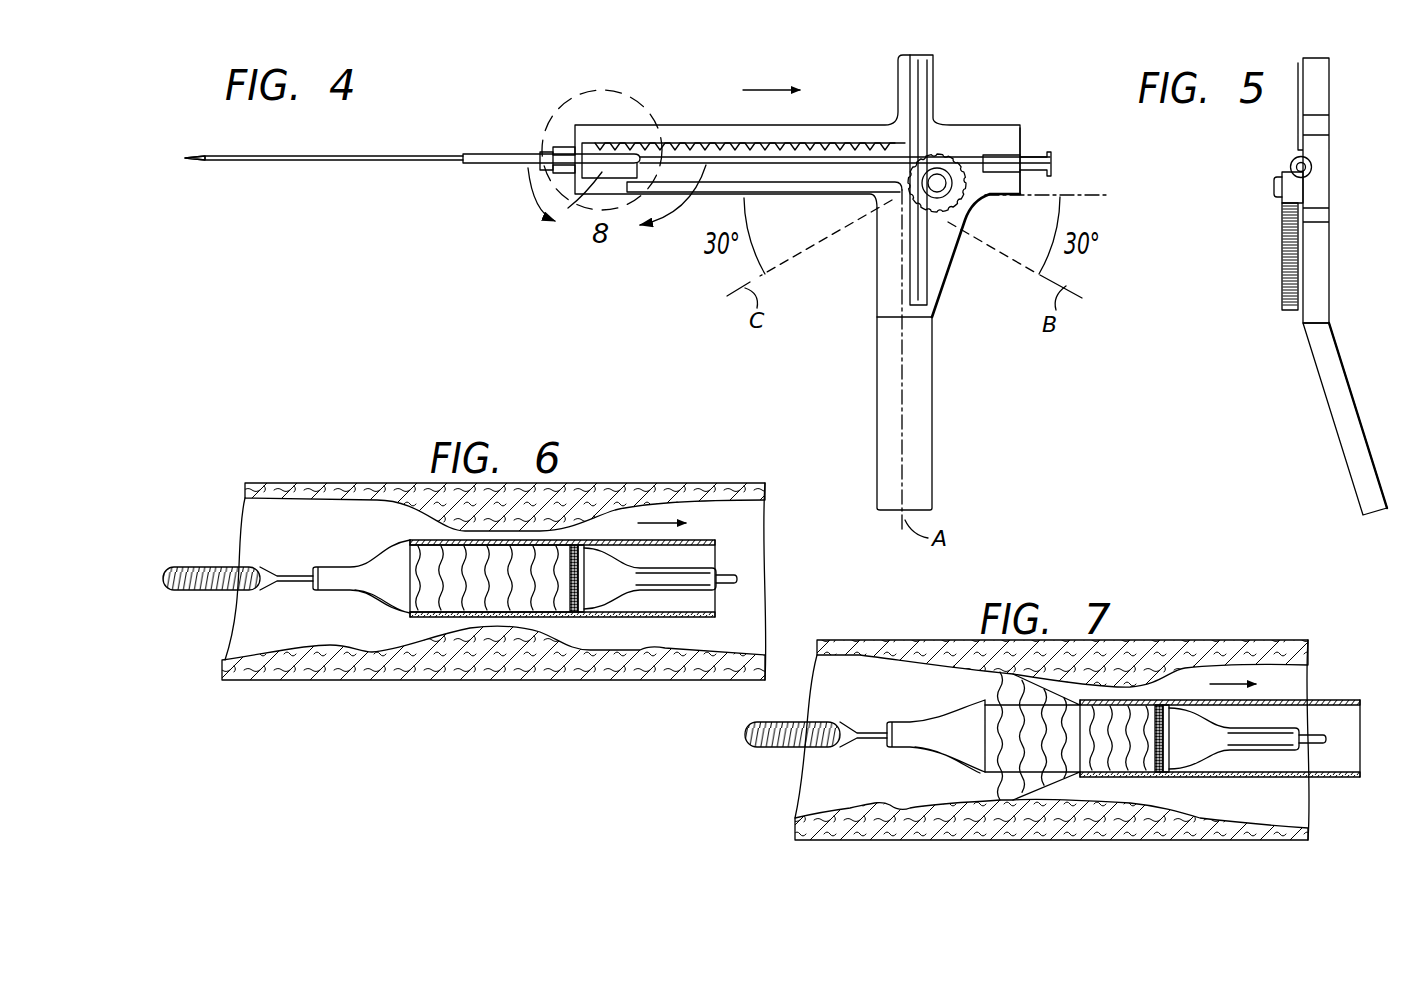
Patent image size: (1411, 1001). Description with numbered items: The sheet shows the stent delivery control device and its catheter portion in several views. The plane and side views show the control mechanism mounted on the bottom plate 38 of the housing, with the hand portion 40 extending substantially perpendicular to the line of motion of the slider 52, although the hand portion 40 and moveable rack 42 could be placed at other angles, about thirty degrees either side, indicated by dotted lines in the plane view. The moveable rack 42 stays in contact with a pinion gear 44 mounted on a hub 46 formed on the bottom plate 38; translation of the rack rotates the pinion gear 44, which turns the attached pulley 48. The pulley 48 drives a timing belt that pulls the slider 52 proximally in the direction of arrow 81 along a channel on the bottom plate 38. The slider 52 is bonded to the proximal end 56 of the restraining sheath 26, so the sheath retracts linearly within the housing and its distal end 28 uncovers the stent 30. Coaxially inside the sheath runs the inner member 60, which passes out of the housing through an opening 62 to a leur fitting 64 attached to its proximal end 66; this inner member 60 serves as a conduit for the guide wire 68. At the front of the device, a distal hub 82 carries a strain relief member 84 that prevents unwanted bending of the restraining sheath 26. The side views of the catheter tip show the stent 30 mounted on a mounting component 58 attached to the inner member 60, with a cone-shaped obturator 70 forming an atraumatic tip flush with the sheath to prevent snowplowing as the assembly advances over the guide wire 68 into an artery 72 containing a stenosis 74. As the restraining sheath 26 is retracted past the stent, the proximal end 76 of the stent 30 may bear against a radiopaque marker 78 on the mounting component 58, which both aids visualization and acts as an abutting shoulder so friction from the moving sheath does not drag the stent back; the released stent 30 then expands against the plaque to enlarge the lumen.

In FIG. 4, the restraining sheath 26 is at (352, 163).
In FIG. 6, the restraining sheath 26 is at (712, 540).
In FIG. 7, the distal end 28 is at (1327, 700).
In FIG. 6, the stent 30 is at (490, 600).
In FIG. 7, the stent 30 is at (1040, 792).
In FIG. 5, the bottom plate 38 is at (1330, 85).
In FIG. 4, the hand portion 40 is at (922, 430).
In FIG. 5, the hand portion 40 is at (1352, 408).
In FIG. 5, the moveable rack 42 is at (1283, 282).
In FIG. 4, the pinion gear 44 is at (947, 223).
In FIG. 5, the pinion gear 44 is at (1290, 195).
In FIG. 4, the hub 46 is at (937, 183).
In FIG. 5, the hub 46 is at (1275, 185).
In FIG. 4, the pulley 48 is at (975, 183).
In FIG. 4, the slider 52 is at (627, 143).
In FIG. 4, the proximal end 56 is at (559, 228).
In FIG. 6, the mounting component 58 is at (420, 606).
In FIG. 4, the inner member 60 is at (702, 165).
In FIG. 6, the inner member 60 is at (684, 593).
In FIG. 7, the inner member 60 is at (1270, 755).
In FIG. 4, the opening 62 is at (547, 150).
In FIG. 4, the leur fitting 64 is at (1053, 162).
In FIG. 5, the leur fitting 64 is at (1312, 167).
In FIG. 4, the proximal end 66 is at (1020, 135).
In FIG. 6, the guide wire 68 is at (200, 565).
In FIG. 7, the guide wire 68 is at (774, 749).
In FIG. 4, the obturator 70 is at (202, 163).
In FIG. 6, the obturator 70 is at (388, 562).
In FIG. 7, the obturator 70 is at (958, 747).
In FIG. 6, the artery 72 is at (292, 674).
In FIG. 7, the artery 72 is at (807, 831).
In FIG. 6, the stenosis 74 is at (440, 508).
In FIG. 7, the stenosis 74 is at (962, 657).
In FIG. 6, the proximal end 76 is at (566, 545).
In FIG. 7, the proximal end 76 is at (1154, 707).
In FIG. 6, the radiopaque marker 78 is at (581, 545).
In FIG. 7, the radiopaque marker 78 is at (1164, 707).
In FIG. 4, the arrow 81 is at (770, 90).
In FIG. 4, the distal hub 82 is at (545, 172).
In FIG. 4, the strain relief member 84 is at (486, 153).